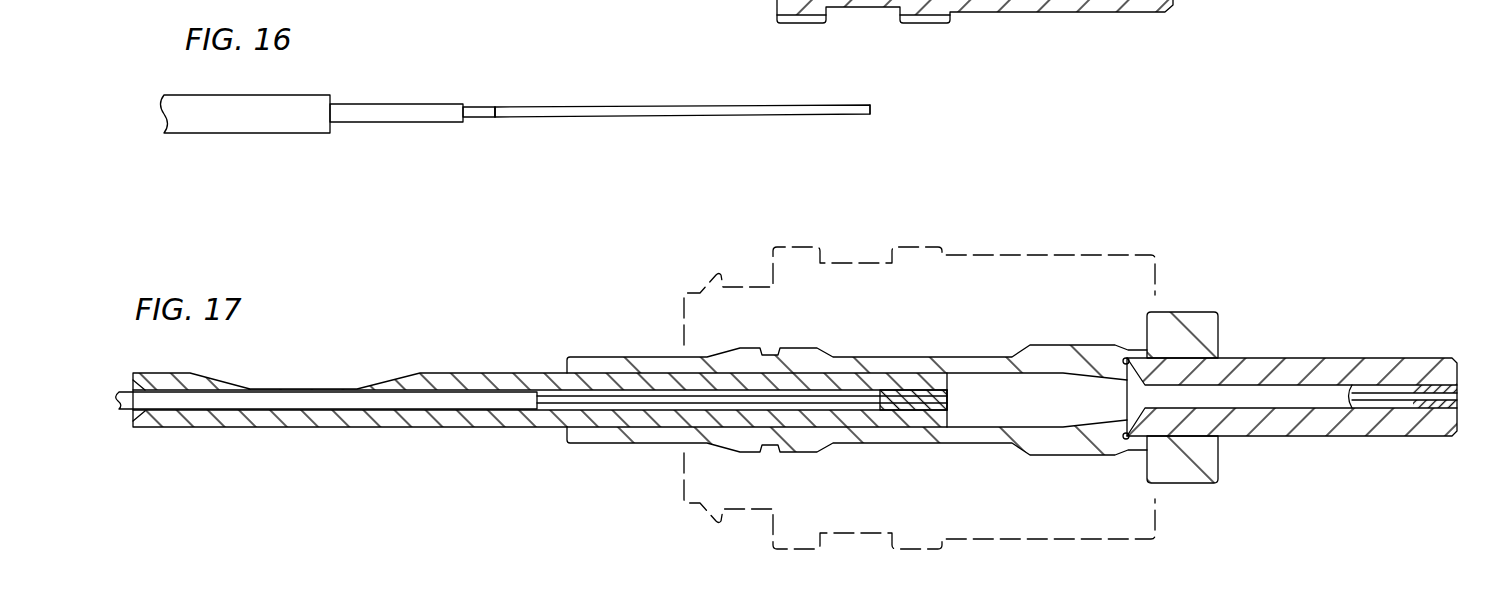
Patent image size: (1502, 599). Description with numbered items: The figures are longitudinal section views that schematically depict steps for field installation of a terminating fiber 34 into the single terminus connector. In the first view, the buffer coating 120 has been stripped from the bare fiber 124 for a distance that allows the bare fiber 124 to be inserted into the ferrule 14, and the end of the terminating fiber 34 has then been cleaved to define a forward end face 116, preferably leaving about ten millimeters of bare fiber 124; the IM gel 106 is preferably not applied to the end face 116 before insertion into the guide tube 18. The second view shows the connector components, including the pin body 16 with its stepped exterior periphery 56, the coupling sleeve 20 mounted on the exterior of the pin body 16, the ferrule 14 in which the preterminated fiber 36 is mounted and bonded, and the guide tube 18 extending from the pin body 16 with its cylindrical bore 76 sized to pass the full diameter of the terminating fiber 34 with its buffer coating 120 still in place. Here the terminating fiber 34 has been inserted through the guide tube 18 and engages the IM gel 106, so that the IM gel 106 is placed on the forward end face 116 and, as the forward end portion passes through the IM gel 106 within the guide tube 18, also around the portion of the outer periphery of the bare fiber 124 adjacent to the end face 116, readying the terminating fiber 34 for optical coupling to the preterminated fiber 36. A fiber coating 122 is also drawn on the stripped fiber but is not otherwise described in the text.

In FIG. 17, the ferrule 14 is at (1318, 358).
In FIG. 17, the pin body 16 is at (1218, 330).
In FIG. 17, the guide tube 18 is at (437, 378).
In FIG. 17, the coupling sleeve 20 is at (1166, 260).
In FIG. 16, the terminating fiber 34 is at (552, 129).
In FIG. 17, the preterminated fiber 36 is at (668, 400).
In FIG. 16, the exterior periphery 56 is at (1130, 5).
In FIG. 17, the cylindrical bore 76 is at (174, 414).
In FIG. 17, the IM gel 106 is at (912, 390).
In FIG. 16, the forward end face 116 is at (870, 110).
In FIG. 17, the forward end face 116 is at (948, 396).
In FIG. 16, the buffer coating 120 is at (377, 123).
In FIG. 16, the fiber coating 122 is at (478, 104).
In FIG. 16, the bare fiber 124 is at (510, 106).